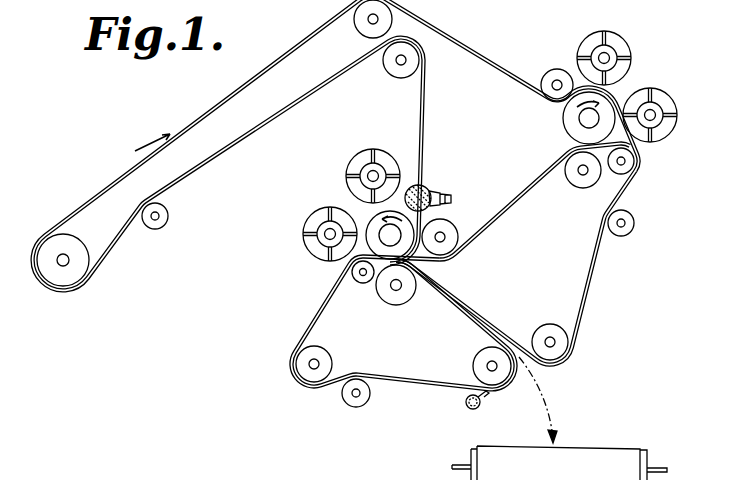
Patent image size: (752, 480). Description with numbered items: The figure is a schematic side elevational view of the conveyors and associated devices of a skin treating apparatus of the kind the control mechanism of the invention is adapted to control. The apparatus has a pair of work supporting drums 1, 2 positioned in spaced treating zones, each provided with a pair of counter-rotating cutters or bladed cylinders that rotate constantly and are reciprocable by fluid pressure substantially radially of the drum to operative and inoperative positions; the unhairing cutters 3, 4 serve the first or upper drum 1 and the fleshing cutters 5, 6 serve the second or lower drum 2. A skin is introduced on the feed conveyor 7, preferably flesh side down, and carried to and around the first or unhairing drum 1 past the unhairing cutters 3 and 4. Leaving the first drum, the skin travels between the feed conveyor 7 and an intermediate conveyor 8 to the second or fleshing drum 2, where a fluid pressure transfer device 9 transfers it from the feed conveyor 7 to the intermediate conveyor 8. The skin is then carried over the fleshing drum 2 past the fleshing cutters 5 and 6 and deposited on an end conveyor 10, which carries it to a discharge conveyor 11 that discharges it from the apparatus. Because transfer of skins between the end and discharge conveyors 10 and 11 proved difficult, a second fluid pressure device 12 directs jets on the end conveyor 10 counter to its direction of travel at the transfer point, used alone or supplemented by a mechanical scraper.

The work supporting drum 1 is at (566, 122).
The work supporting drum 2 is at (434, 269).
The unhairing cutter 3 is at (632, 63).
The unhairing cutter 4 is at (675, 104).
The fleshing cutter 5 is at (356, 157).
The fleshing cutter 6 is at (314, 254).
The feed conveyor 7 is at (221, 108).
The intermediate conveyor 8 is at (589, 288).
The transfer device 9 is at (426, 190).
The end conveyor 10 is at (317, 321).
The discharge conveyor 11 is at (605, 447).
The second fluid pressure device 12 is at (463, 408).